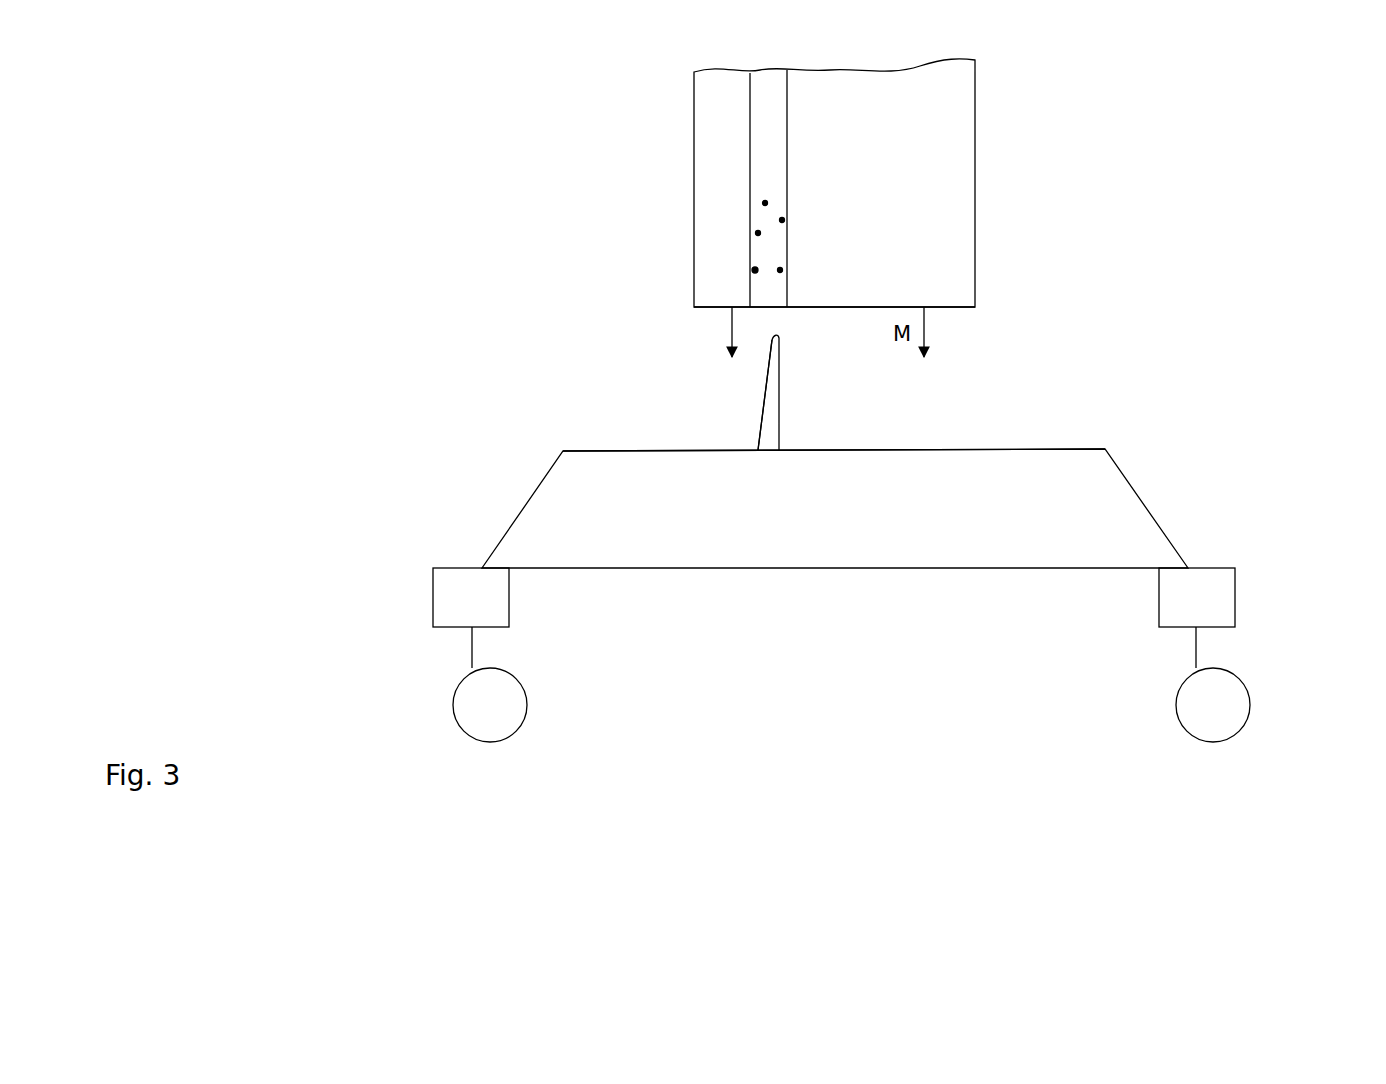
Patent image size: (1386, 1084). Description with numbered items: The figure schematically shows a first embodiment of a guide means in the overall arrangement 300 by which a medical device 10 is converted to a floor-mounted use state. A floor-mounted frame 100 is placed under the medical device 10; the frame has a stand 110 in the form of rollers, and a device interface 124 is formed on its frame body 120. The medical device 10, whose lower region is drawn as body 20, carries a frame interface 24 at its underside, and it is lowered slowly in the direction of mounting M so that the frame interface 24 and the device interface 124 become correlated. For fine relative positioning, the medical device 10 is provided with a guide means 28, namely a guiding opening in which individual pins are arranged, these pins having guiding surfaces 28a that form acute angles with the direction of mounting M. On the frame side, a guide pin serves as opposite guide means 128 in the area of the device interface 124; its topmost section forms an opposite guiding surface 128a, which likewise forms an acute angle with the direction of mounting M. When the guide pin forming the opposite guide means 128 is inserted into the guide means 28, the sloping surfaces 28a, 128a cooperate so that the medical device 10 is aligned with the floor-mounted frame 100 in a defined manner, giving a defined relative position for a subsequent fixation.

The medical device 10 is at (927, 193).
The head body 20 is at (960, 207).
The frame interface 24 is at (952, 309).
The guide means 28 is at (760, 248).
The guiding surfaces 28a is at (755, 270).
The floor-mounted frame 100 is at (802, 538).
The stand 110 is at (475, 713).
The frame body 120 is at (520, 543).
The device interface 124 is at (930, 449).
The opposite guide means 128 is at (736, 408).
The opposite guiding surface 128a is at (763, 367).
The system 300 is at (1260, 252).